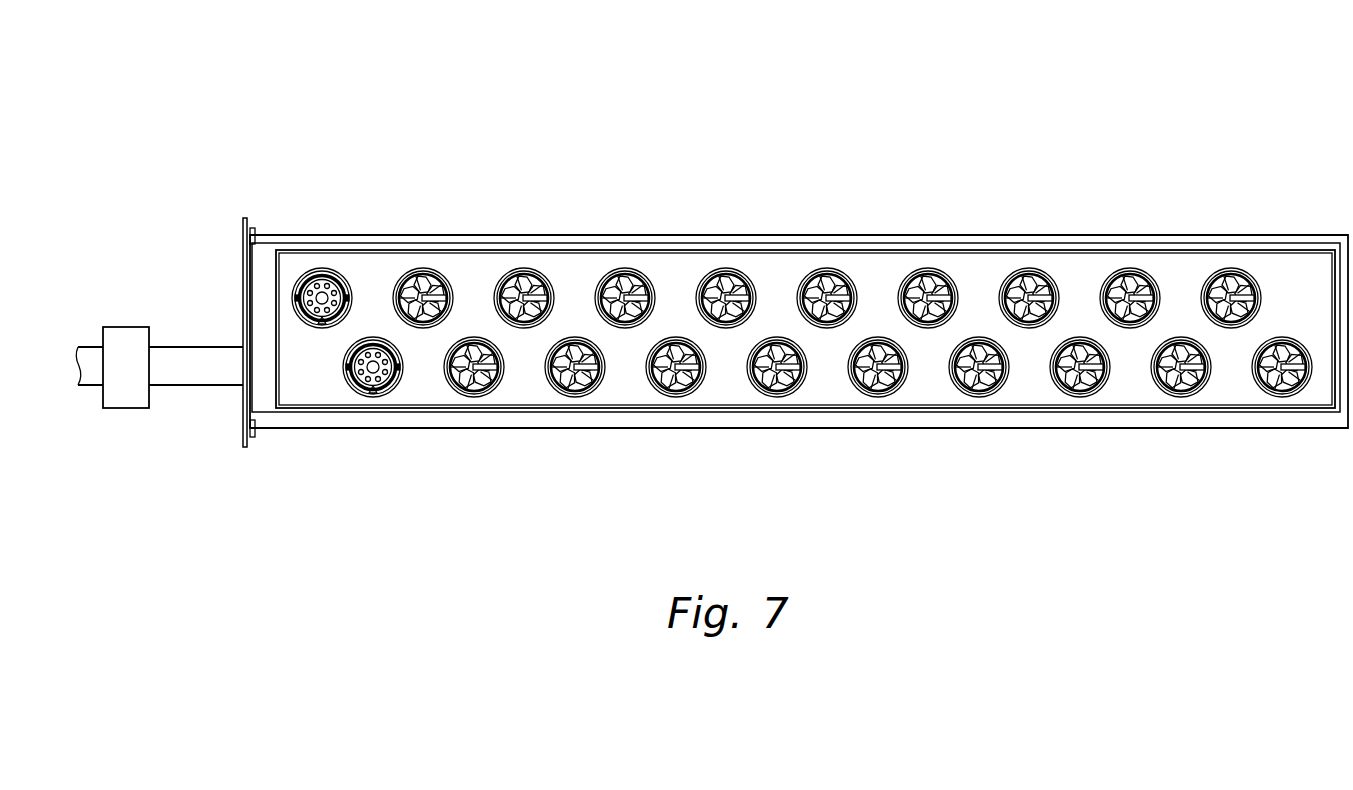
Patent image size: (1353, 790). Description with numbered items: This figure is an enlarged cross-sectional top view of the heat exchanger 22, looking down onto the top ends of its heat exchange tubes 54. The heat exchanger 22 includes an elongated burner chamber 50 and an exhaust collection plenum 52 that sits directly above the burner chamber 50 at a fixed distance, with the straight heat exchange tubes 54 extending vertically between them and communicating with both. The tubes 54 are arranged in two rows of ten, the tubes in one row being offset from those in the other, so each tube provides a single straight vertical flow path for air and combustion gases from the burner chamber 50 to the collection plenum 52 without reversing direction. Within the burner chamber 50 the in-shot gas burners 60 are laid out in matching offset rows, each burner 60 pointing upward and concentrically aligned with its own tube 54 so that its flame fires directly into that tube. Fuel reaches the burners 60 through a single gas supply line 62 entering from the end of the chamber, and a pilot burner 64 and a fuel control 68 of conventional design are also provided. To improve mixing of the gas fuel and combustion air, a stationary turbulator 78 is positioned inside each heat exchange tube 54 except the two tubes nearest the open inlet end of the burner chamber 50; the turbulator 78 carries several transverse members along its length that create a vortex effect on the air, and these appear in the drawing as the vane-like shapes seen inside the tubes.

The heat exchanger 22 is at (1108, 132).
The burner chamber 50 is at (1208, 422).
The exhaust collection plenum 52 is at (1278, 248).
The heat exchange tubes 54 is at (345, 272).
The in-shot gas burners 60 is at (320, 275).
The gas supply line 62 is at (193, 385).
The pilot burner 64 is at (318, 327).
The fuel control 68 is at (122, 330).
The turbulator 78 is at (578, 388).